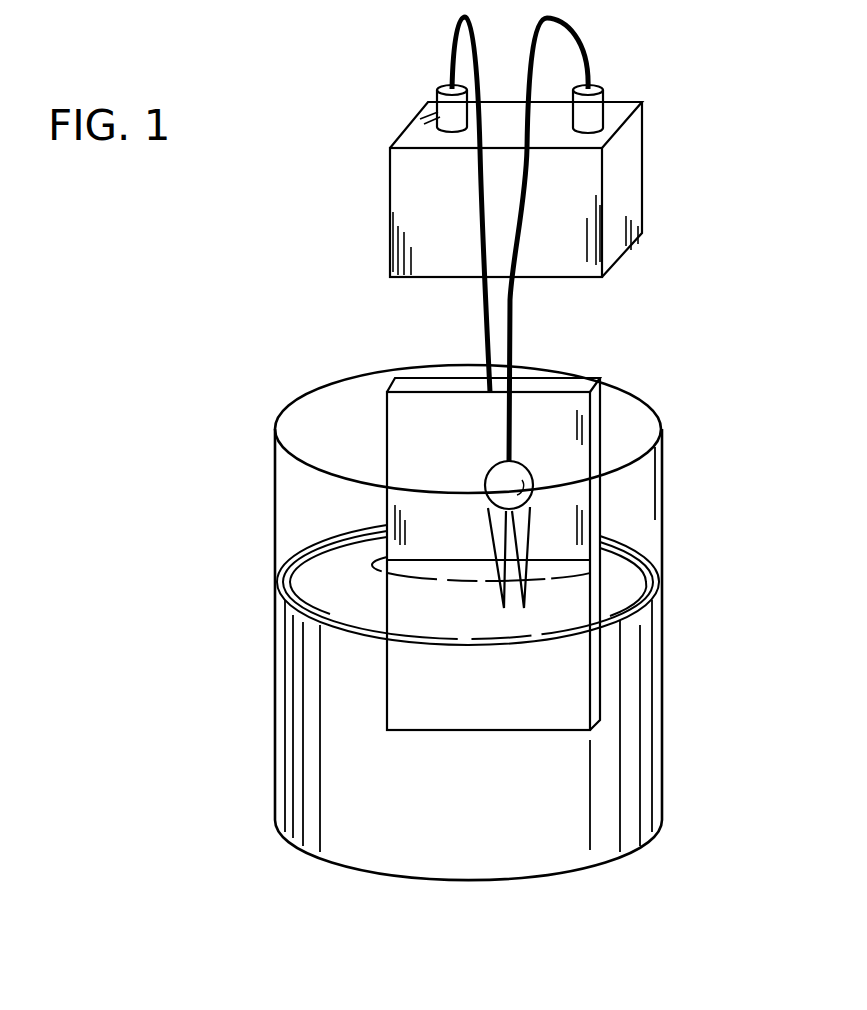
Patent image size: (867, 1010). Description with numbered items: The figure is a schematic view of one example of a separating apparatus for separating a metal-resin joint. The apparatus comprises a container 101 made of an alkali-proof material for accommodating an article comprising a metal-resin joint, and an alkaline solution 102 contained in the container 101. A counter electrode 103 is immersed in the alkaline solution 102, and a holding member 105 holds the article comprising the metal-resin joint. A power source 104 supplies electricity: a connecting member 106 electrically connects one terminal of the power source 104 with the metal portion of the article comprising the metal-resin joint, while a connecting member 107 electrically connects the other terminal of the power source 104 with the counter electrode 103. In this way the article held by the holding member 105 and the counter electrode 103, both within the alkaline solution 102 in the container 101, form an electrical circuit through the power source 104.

The container 101 is at (632, 500).
The alkaline solution 102 is at (620, 782).
The counter electrode 103 is at (417, 417).
The power source 104 is at (625, 188).
The holding member 105 is at (488, 488).
The connecting member 106 is at (512, 322).
The connecting member 107 is at (478, 216).